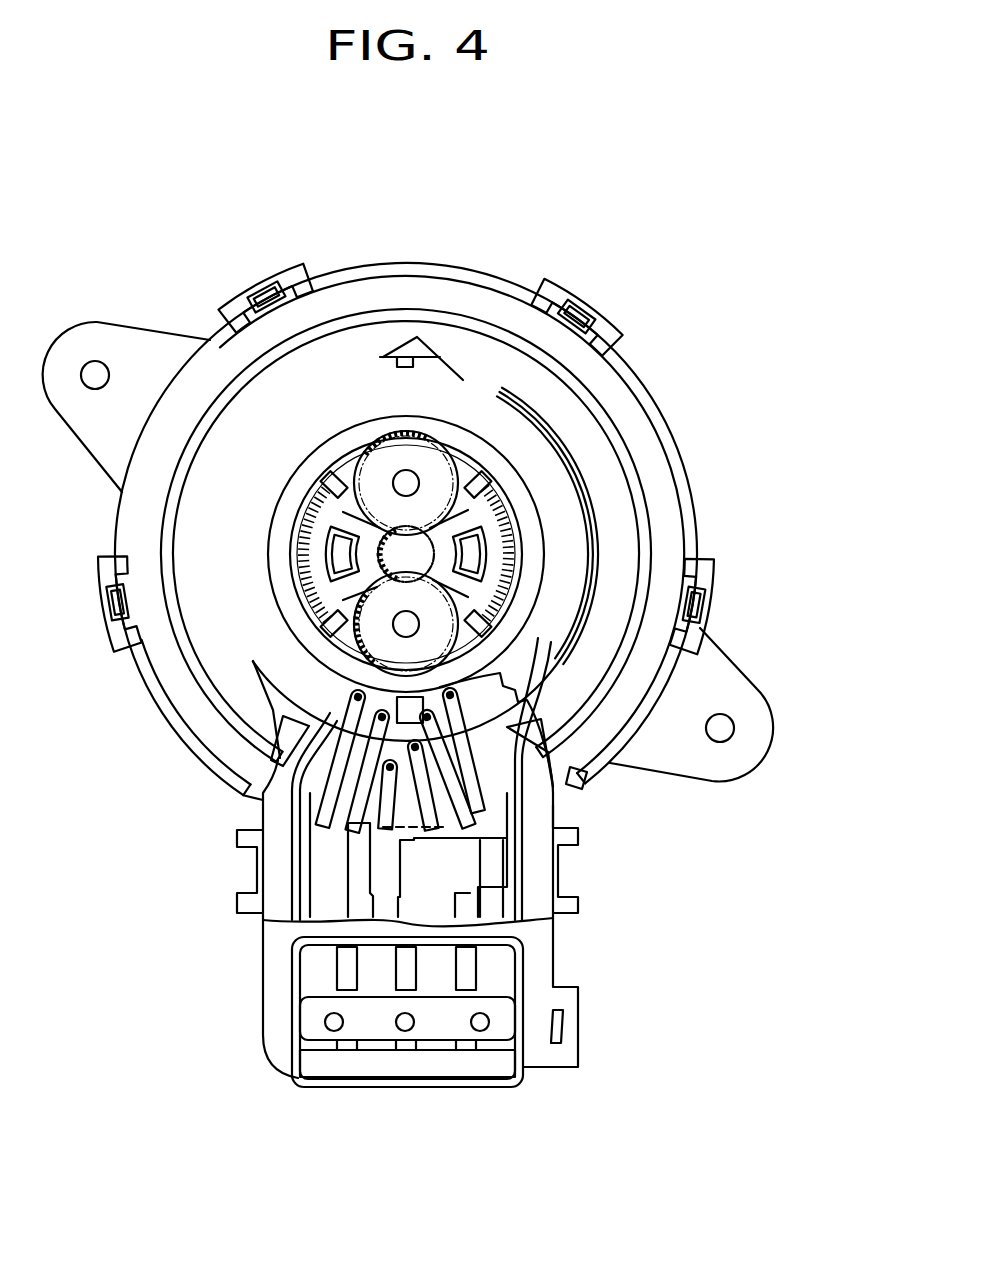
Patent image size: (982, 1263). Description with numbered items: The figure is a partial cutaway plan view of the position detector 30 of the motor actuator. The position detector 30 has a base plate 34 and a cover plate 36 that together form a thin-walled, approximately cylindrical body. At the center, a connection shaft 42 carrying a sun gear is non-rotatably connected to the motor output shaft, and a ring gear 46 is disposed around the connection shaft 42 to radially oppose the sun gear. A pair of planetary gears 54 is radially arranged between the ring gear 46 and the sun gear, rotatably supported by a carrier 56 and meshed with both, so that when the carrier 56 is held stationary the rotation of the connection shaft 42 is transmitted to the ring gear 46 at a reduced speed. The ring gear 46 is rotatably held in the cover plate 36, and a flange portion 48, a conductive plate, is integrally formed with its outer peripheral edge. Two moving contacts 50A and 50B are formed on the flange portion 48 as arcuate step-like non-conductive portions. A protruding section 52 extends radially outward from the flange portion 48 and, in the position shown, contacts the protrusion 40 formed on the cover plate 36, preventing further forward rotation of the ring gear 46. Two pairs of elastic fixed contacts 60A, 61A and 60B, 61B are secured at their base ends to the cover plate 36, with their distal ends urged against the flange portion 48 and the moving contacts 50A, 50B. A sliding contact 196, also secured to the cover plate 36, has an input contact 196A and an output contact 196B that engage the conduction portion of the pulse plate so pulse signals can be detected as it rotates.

The position detector 30 is at (523, 199).
The base plate 34 is at (650, 455).
The cover plate 36 is at (657, 393).
The protrusion 40 is at (425, 455).
The connection shaft 42 is at (436, 552).
The ring gear 46 is at (500, 465).
The flange portion 48 is at (495, 425).
The moving contact 50A is at (376, 735).
The moving contact 50B is at (462, 708).
The protruding section 52 is at (383, 353).
The planetary gears 54 is at (470, 420).
The carrier 56 is at (485, 522).
The fixed contact 60A is at (557, 797).
The fixed contact 60B is at (585, 784).
The fixed contact 61A is at (375, 770).
The fixed contact 61B is at (350, 715).
The sliding contact 196 is at (138, 833).
The input contact 196A is at (432, 818).
The output contact 196B is at (363, 862).